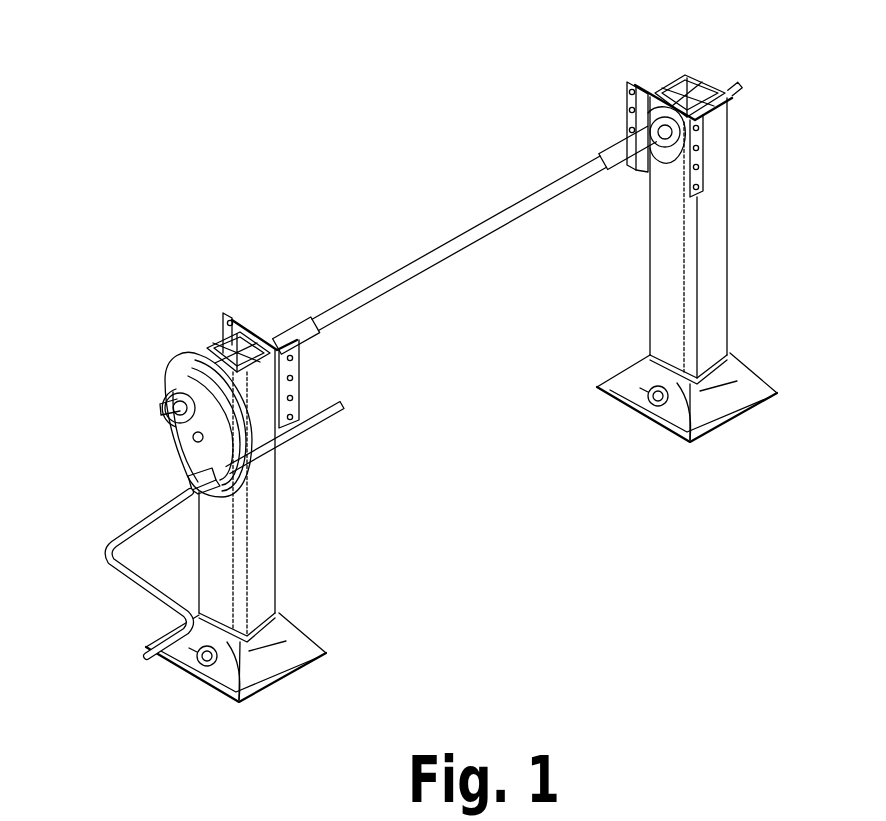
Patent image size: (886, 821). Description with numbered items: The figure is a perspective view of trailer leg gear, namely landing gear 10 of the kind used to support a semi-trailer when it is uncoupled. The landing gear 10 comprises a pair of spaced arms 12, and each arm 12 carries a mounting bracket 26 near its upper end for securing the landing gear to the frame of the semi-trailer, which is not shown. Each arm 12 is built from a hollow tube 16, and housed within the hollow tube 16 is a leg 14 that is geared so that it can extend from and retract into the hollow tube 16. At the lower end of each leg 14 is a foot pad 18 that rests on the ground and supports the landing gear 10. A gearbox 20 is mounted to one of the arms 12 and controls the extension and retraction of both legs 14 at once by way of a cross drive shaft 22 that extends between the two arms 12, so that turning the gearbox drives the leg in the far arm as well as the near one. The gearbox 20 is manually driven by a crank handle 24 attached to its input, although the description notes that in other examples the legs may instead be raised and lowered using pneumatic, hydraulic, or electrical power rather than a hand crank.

The landing gear 10 is at (410, 108).
The arm 12 is at (727, 200).
The leg 14 is at (723, 357).
The hollow tube 16 is at (725, 262).
The foot pad 18 is at (735, 417).
The gearbox 20 is at (170, 367).
The cross drive shaft 22 is at (447, 247).
The crank handle 24 is at (107, 565).
The mounting bracket 26 is at (643, 84).